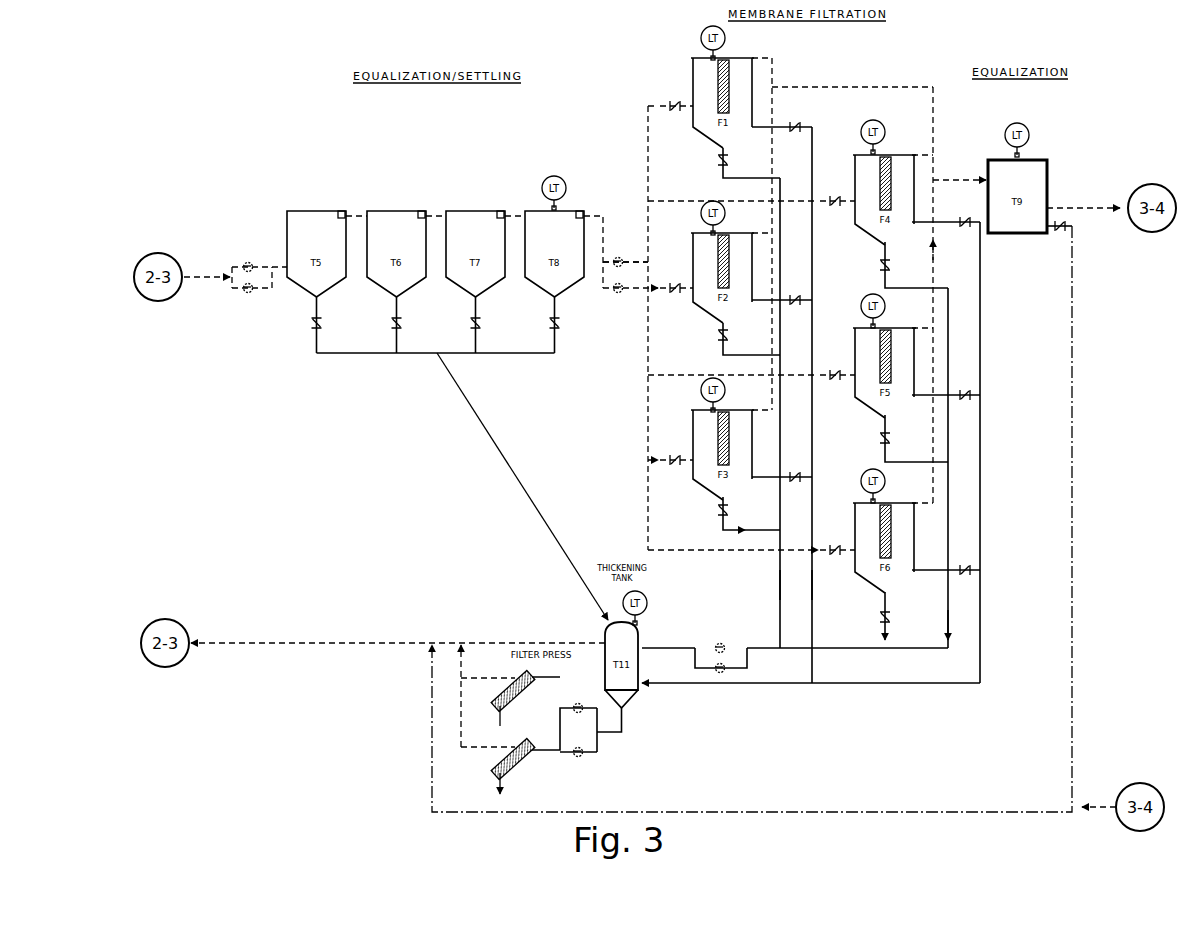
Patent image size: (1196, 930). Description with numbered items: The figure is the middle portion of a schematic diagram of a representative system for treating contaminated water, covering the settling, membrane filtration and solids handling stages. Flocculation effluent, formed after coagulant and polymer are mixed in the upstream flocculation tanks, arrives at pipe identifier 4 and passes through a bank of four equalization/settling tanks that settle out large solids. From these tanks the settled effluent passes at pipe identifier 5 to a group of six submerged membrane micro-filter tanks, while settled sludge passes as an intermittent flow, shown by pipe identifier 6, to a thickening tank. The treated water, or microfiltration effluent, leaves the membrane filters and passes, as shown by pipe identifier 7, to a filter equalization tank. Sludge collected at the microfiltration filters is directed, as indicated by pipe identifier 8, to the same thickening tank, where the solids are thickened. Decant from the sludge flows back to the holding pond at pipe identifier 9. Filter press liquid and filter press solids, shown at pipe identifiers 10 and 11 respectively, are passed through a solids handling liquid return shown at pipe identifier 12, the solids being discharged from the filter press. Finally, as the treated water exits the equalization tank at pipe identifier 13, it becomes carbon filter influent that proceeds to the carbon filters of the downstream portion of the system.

The flocculation effluent pipe 4 is at (235, 258).
The settled effluent pipe 5 is at (638, 254).
The settled sludge pipe 6 is at (522, 486).
The microfiltration effluent pipe 7 is at (959, 204).
The microfiltration sludge pipe 8 is at (811, 405).
The sludge decant pipe 9 is at (480, 680).
The filter press liquid pipe 10 is at (541, 701).
The filter press solids pipe 11 is at (502, 738).
The solids handling liquid return pipe 12 is at (653, 516).
The carbon filter influent pipe 13 is at (1083, 191).